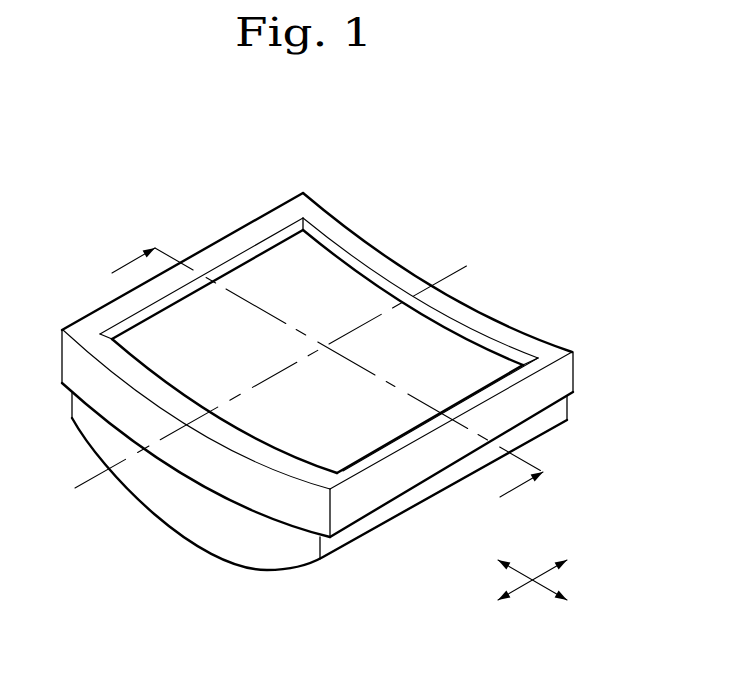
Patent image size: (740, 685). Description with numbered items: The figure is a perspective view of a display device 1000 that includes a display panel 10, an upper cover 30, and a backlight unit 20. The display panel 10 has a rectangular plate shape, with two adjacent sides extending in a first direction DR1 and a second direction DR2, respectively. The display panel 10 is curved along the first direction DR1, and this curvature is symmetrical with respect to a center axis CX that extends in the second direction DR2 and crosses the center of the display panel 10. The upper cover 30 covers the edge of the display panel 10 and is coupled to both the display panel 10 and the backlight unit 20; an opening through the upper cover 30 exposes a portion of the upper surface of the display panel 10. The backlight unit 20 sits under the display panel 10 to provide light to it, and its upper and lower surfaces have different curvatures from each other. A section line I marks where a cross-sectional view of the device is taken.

The display device 1000 is at (347, 406).
The display panel 10 is at (340, 287).
The backlight unit 20 is at (227, 540).
The upper cover 30 is at (562, 372).
The center axis CX is at (268, 381).
The line I-I' I is at (319, 384).
The first direction DR1 is at (550, 591).
The second direction DR2 is at (550, 569).